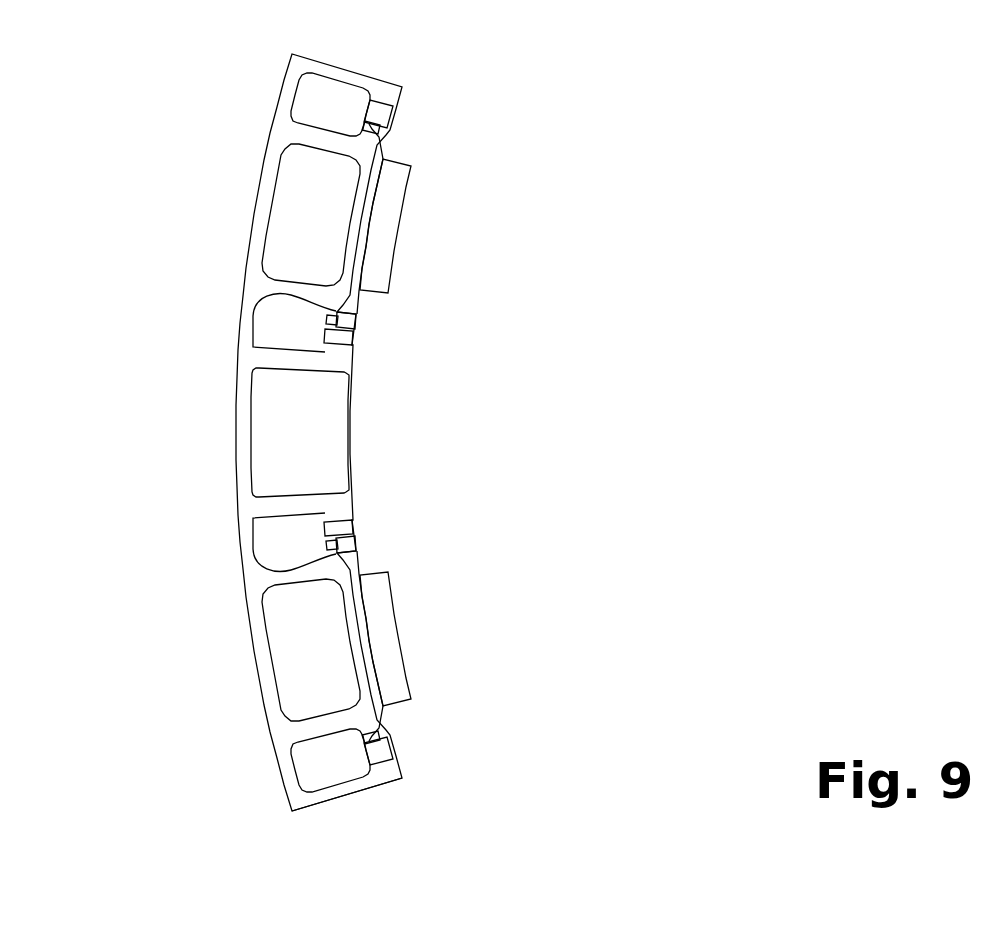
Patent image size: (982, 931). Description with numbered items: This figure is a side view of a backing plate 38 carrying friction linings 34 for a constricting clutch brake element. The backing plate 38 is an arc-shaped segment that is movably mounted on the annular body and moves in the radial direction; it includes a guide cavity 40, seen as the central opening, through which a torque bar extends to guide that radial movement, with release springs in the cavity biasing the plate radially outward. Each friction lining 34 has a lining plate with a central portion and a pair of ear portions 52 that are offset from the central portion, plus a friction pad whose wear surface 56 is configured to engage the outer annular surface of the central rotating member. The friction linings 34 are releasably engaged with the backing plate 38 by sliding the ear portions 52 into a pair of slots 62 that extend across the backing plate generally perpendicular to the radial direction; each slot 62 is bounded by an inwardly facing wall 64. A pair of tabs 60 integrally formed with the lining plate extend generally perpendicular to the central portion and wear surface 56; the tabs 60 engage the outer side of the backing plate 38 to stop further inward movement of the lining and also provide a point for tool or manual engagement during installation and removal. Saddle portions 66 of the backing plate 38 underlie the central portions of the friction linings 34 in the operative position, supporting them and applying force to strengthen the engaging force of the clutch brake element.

The friction lining 34 is at (386, 702).
The backing plate 38 is at (231, 478).
The guide cavity 40 is at (322, 412).
The ear portions 52 is at (322, 542).
The wear surface 56 is at (402, 194).
The tabs 60 is at (392, 104).
The slots 62 is at (330, 92).
The inwardly facing wall 64 is at (383, 763).
The saddle portions 66 is at (355, 182).